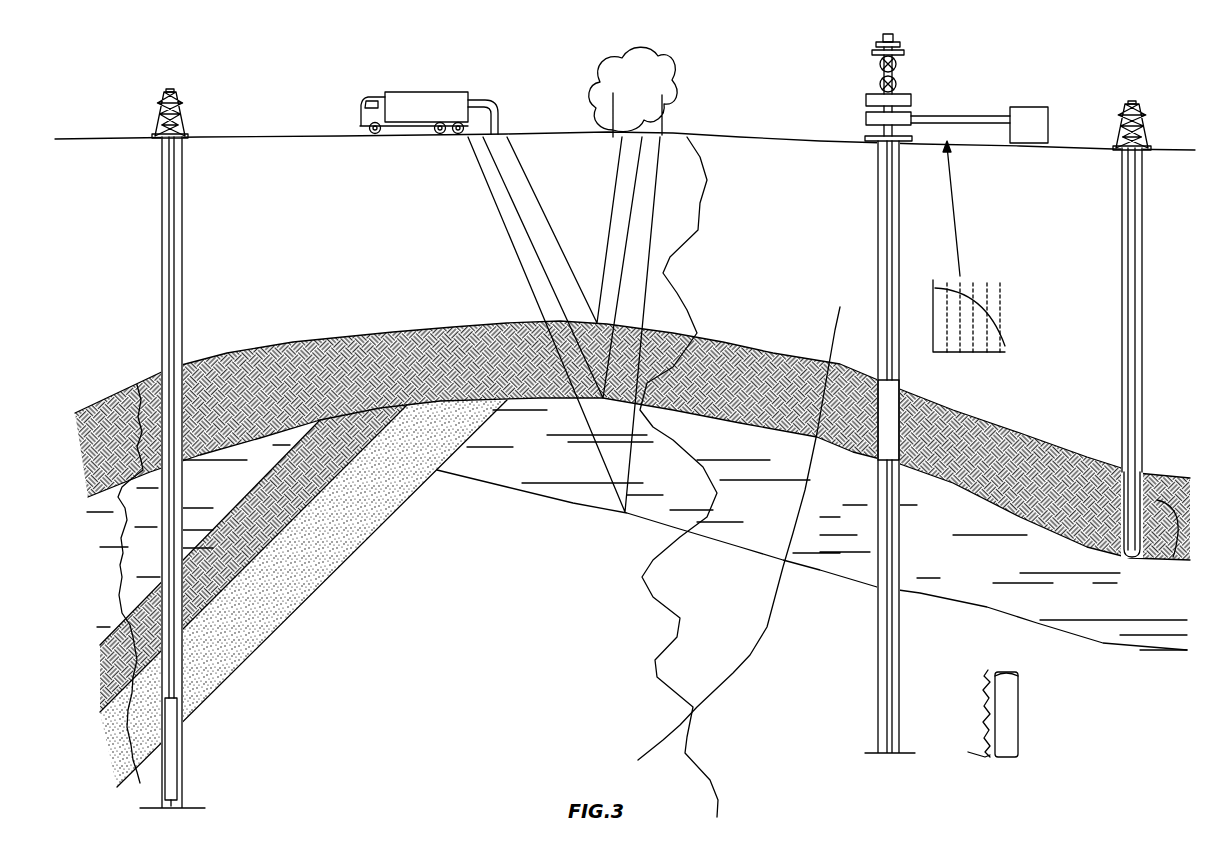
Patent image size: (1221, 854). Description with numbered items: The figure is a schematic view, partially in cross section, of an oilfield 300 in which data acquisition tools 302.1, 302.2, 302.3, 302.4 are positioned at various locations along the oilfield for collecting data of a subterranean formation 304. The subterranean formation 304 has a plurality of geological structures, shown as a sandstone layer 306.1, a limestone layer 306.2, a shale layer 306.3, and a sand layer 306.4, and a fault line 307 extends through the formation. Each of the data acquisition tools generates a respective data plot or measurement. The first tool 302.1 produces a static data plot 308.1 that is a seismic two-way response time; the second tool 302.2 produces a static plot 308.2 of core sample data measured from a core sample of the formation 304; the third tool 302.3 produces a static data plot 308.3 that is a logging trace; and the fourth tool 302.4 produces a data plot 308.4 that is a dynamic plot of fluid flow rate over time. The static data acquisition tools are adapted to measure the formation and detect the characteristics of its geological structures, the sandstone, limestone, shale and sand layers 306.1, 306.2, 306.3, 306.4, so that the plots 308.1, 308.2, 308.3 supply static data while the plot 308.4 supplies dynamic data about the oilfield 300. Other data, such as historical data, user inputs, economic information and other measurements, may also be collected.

The oilfield 300 is at (1071, 96).
The data acquisition tool 302.1 is at (392, 88).
The data acquisition tool 302.2 is at (1167, 349).
The data acquisition tool 302.3 is at (183, 753).
The data acquisition tool 302.4 is at (902, 455).
The subterranean formation 304 is at (500, 597).
The sandstone layer 306.1 is at (318, 390).
The limestone layer 306.2 is at (242, 494).
The shale layer 306.3 is at (307, 512).
The sand layer 306.4 is at (347, 564).
The fault line 307 is at (835, 328).
The static data plot 308.1 is at (675, 632).
The static data plot 308.2 is at (1113, 535).
The static data plot 308.3 is at (122, 578).
The dynamic data plot 308.4 is at (980, 357).